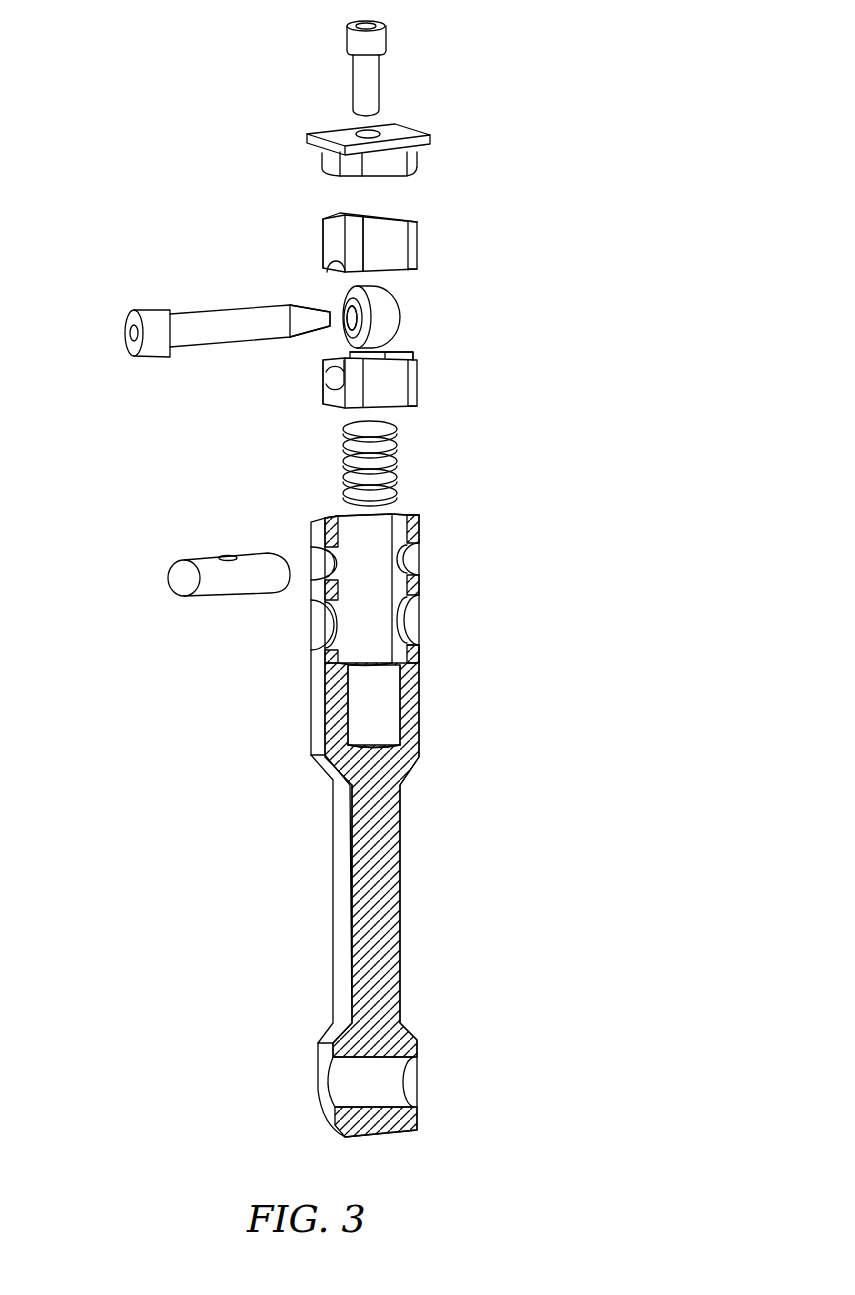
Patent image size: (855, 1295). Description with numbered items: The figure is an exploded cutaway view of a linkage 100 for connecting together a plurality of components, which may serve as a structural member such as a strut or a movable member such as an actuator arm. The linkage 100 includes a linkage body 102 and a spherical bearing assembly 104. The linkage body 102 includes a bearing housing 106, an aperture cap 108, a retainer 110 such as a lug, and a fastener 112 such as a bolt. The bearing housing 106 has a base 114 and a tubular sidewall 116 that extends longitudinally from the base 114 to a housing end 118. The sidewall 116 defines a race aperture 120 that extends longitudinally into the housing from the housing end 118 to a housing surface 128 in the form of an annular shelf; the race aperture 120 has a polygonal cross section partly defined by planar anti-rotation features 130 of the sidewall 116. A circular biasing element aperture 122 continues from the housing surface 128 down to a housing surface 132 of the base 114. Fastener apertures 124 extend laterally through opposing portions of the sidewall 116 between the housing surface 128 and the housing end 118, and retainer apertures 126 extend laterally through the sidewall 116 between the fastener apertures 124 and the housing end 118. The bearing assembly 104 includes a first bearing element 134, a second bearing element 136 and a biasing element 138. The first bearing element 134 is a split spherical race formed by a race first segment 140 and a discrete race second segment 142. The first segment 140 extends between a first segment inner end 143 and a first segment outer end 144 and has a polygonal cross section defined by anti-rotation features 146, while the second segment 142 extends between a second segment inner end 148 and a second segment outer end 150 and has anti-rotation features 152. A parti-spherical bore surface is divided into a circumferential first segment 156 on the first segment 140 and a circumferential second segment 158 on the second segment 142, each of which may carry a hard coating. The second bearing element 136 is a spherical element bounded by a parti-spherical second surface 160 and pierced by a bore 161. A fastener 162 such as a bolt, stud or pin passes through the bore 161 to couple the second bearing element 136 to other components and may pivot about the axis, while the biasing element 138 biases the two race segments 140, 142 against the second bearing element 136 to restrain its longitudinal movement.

The linkage 100 is at (103, 152).
The linkage body 102 is at (372, 799).
The spherical bearing assembly 104 is at (440, 308).
The bearing housing 106 is at (310, 710).
The aperture cap 108 is at (432, 147).
The retainer 110 is at (178, 582).
The fastener 112 is at (388, 40).
The base 114 is at (412, 760).
The sidewall 116 is at (415, 590).
The housing end 118 is at (412, 521).
The race aperture 120 is at (385, 588).
The biasing element aperture 122 is at (392, 720).
The fastener apertures 124 is at (407, 622).
The retainer apertures 126 is at (312, 560).
The housing surface 128 is at (420, 660).
The anti-rotation features 130 is at (345, 523).
The housing surface 132 is at (350, 740).
The first bearing element 134 is at (467, 385).
The second bearing element 136 is at (346, 312).
The biasing element 138 is at (400, 455).
The race first segment 140 is at (335, 400).
The race second segment 142 is at (326, 237).
The first segment inner end 143 is at (415, 355).
The first segment outer end 144 is at (415, 406).
The anti-rotation features 146 is at (330, 383).
The second segment inner end 148 is at (406, 272).
The second segment outer end 150 is at (414, 222).
The anti-rotation features 152 is at (377, 235).
The circumferential first segment of the first surface 156 is at (328, 359).
The circumferential second segment of the first surface 158 is at (332, 270).
The second surface 160 is at (387, 320).
The bore 161 is at (345, 318).
The fastener 162 is at (130, 347).